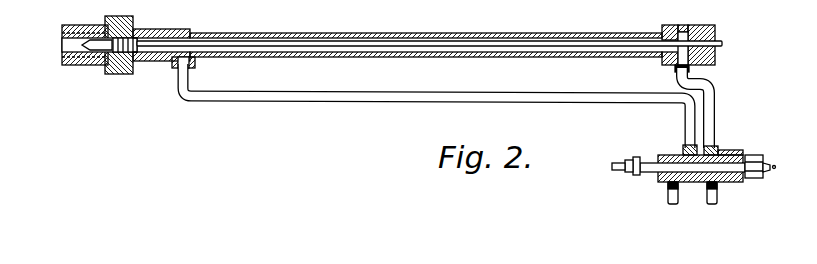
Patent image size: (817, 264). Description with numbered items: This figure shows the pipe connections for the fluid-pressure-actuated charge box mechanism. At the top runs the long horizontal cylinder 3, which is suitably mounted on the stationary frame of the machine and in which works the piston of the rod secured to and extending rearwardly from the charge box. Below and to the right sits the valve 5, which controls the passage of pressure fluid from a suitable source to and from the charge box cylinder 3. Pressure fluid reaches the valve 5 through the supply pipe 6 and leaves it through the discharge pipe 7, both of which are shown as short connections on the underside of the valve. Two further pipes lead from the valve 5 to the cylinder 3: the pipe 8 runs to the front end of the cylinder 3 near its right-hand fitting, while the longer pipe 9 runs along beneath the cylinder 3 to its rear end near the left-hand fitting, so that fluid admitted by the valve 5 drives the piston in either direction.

The horizontal cylinder 3 is at (291, 33).
The valve 5 is at (732, 148).
The supply pipe 6 is at (717, 197).
The discharge pipe 7 is at (668, 193).
The pipe 8 is at (716, 110).
The pipe 9 is at (342, 101).